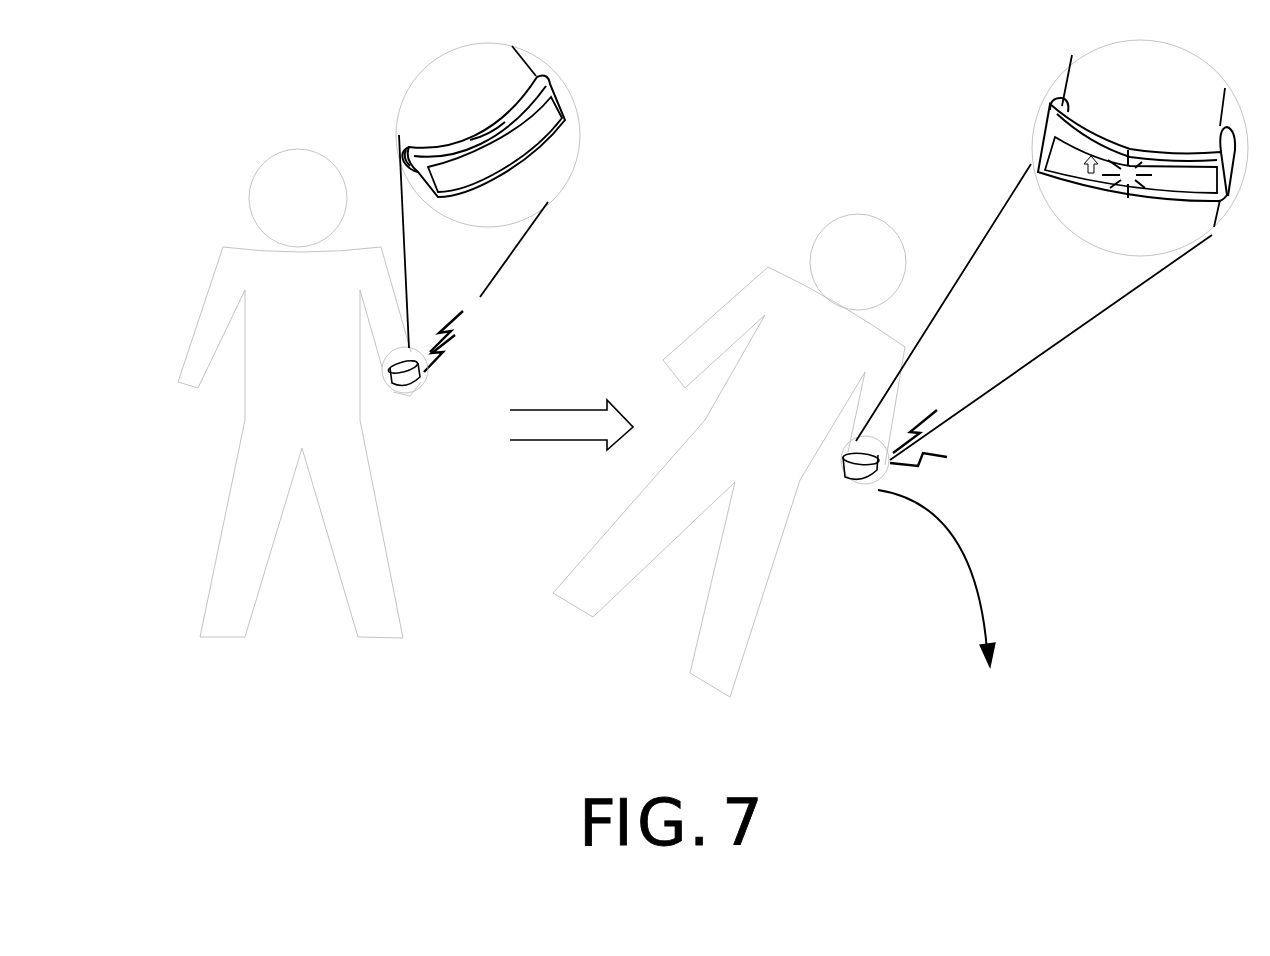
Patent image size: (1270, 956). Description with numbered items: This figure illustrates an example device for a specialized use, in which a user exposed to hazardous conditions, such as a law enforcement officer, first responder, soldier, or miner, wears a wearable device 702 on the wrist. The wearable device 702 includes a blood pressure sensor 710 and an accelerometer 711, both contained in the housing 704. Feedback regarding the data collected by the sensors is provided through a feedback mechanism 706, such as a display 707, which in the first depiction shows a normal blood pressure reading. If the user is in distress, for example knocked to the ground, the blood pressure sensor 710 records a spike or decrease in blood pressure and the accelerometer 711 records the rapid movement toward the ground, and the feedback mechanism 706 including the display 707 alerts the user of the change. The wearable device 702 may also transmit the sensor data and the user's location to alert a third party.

The wearable device 702 is at (405, 373).
The housing 704 is at (561, 125).
The feedback mechanism 706 is at (1132, 182).
The display 707 is at (505, 165).
The blood pressure sensor 710 is at (447, 150).
The accelerometer 711 is at (487, 133).